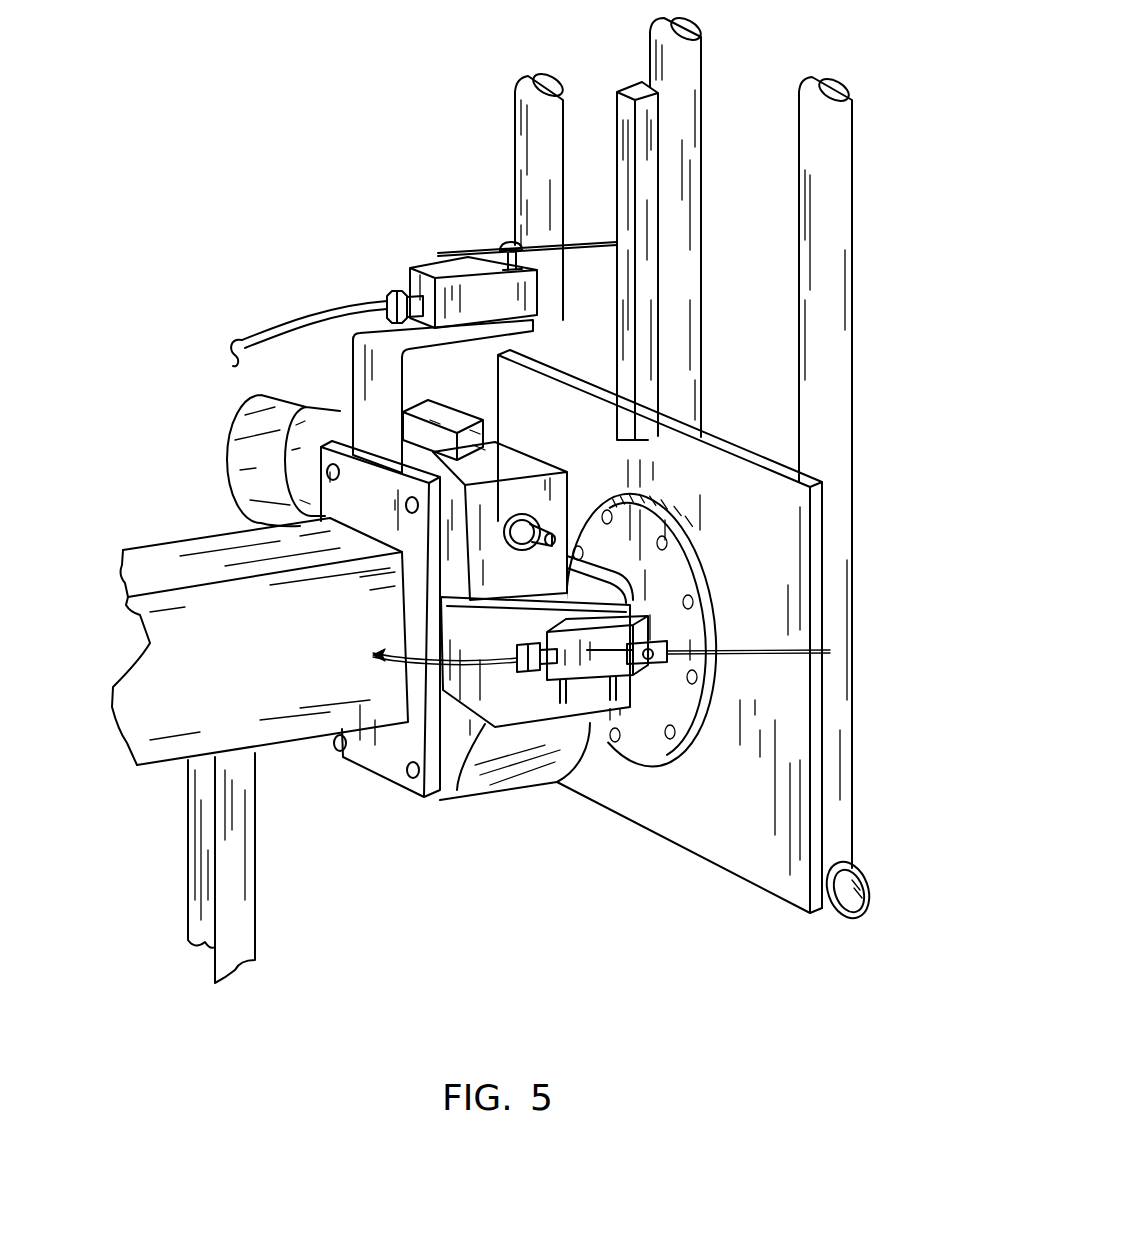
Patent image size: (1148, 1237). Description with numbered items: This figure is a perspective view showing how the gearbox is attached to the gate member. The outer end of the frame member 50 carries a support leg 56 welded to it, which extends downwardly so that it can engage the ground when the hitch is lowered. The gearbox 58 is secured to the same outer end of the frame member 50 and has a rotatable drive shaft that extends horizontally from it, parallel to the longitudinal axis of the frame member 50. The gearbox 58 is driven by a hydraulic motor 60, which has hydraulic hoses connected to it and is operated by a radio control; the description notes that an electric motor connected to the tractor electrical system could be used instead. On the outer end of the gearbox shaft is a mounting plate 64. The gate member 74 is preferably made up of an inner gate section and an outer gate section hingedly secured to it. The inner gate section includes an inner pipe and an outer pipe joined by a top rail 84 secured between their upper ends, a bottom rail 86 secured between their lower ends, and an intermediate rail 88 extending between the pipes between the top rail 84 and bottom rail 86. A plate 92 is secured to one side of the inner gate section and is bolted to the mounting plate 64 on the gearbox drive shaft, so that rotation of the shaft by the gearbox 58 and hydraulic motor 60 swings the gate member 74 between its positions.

The frame member 50 is at (182, 723).
The support leg 56 is at (238, 887).
The gearbox 58 is at (520, 747).
The hydraulic motor 60 is at (227, 422).
The mounting plate 64 is at (668, 577).
The gate member 74 is at (853, 418).
The top rail 84 is at (535, 163).
The bottom rail 86 is at (837, 222).
The intermediate rail 88 is at (685, 60).
The plate 92 is at (754, 798).